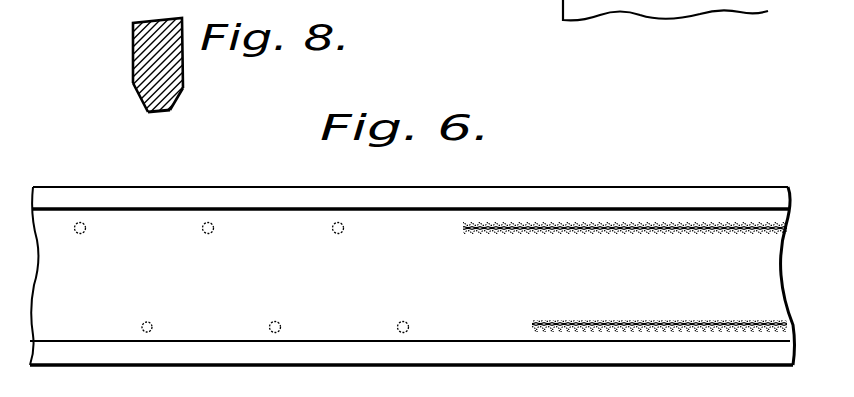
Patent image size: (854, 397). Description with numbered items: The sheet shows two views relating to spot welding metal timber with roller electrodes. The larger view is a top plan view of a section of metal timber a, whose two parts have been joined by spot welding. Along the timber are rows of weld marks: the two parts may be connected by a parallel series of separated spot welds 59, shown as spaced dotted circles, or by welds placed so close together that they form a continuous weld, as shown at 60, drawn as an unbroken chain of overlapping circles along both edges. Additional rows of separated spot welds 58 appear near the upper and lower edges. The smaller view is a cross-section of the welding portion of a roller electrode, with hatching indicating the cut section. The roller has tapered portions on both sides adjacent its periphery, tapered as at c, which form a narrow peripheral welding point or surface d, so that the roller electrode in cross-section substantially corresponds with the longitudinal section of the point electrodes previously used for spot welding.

In FIG. 6, the rivet holes 58 is at (332, 228).
In FIG. 6, the separated spot welds 59 is at (397, 327).
In FIG. 6, the continuous weld 60 is at (599, 330).
In FIG. 6, the rail body a is at (412, 276).
In FIG. 8, the tapered portions c is at (177, 100).
In FIG. 8, the peripheral welding point or surface d is at (158, 117).